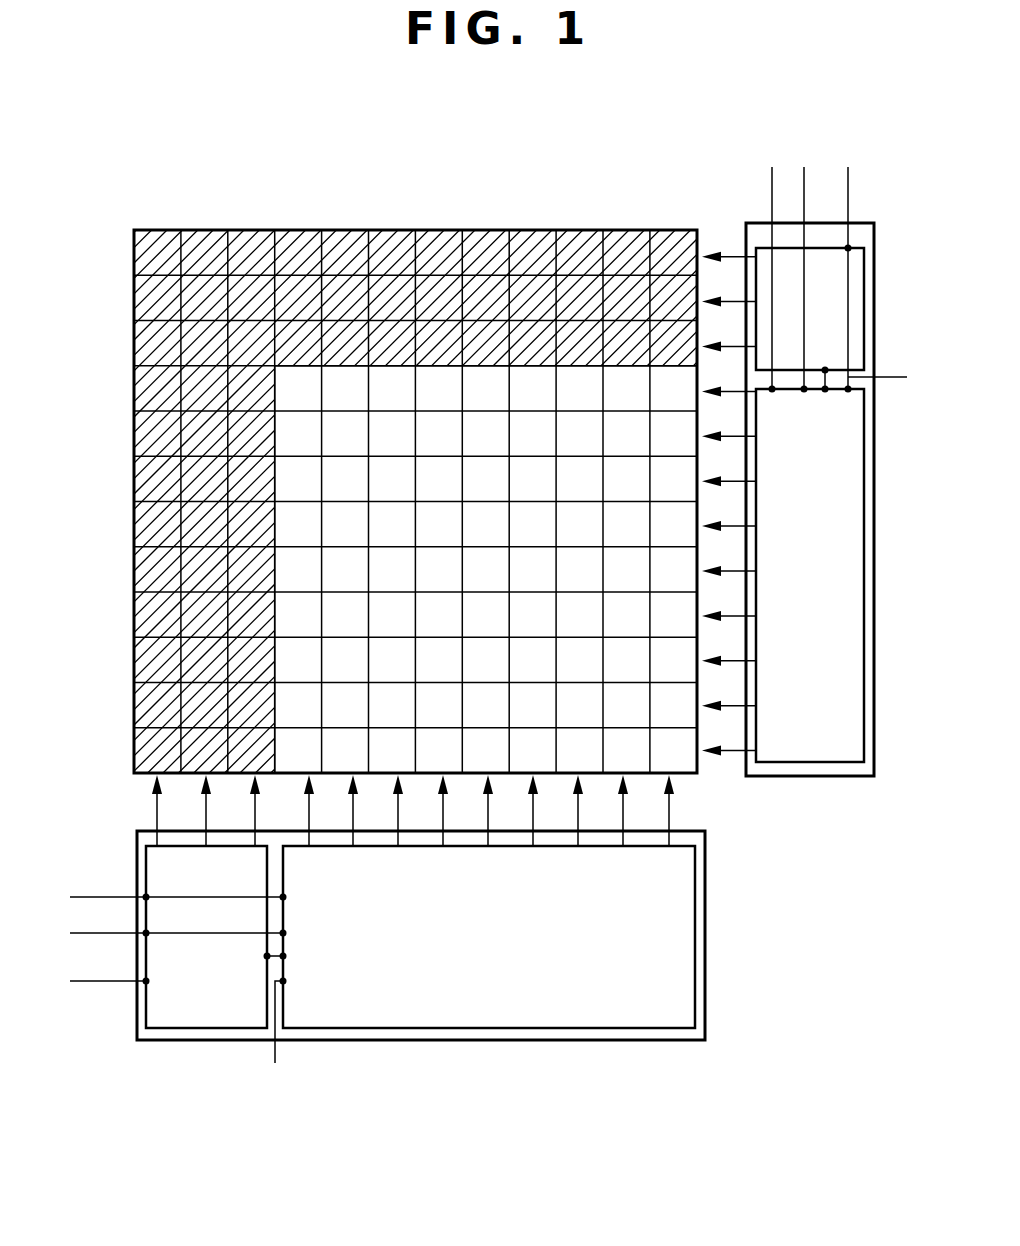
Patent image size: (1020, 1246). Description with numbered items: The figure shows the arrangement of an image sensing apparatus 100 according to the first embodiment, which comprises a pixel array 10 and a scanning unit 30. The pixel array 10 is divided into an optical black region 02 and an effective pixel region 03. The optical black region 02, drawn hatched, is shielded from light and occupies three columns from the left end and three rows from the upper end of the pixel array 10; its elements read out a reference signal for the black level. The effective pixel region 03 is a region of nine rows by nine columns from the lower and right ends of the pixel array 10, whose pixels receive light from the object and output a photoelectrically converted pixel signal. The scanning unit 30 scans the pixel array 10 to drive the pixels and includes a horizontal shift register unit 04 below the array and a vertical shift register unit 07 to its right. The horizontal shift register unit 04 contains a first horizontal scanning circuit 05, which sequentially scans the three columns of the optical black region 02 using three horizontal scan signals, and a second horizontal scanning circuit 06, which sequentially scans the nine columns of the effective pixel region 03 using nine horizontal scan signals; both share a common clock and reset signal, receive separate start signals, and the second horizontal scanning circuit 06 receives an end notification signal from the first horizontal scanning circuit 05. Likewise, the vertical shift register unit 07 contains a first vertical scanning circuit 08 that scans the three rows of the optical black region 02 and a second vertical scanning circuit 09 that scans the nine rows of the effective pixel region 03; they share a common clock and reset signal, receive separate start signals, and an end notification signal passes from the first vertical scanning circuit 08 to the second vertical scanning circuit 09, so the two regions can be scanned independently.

The image sensing apparatus 100 is at (240, 1127).
The pixel array 10 is at (356, 174).
The optical black region 02 is at (150, 483).
The effective pixel region 03 is at (339, 398).
The vertical shift register unit 07 is at (758, 229).
The first vertical scanning circuit 08 is at (822, 253).
The second vertical scanning circuit 09 is at (818, 762).
The scanning unit 30 is at (111, 1066).
The horizontal shift register unit 04 is at (137, 1028).
The first horizontal scanning circuit 05 is at (200, 1030).
The second horizontal scanning circuit 06 is at (500, 1025).